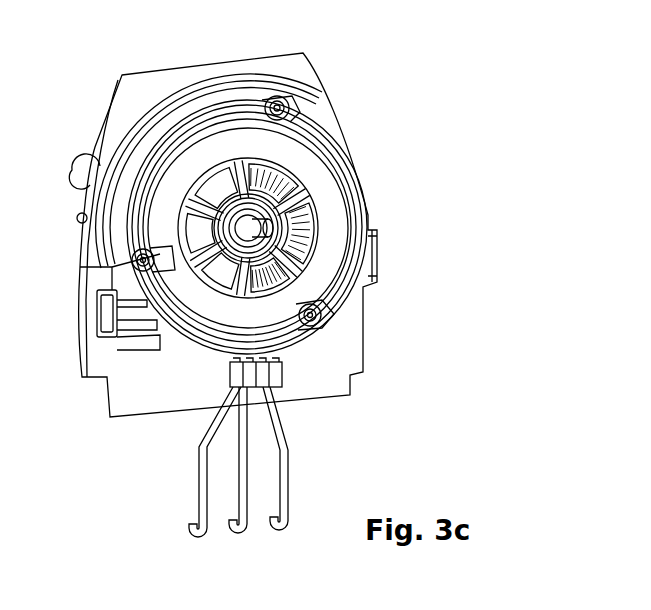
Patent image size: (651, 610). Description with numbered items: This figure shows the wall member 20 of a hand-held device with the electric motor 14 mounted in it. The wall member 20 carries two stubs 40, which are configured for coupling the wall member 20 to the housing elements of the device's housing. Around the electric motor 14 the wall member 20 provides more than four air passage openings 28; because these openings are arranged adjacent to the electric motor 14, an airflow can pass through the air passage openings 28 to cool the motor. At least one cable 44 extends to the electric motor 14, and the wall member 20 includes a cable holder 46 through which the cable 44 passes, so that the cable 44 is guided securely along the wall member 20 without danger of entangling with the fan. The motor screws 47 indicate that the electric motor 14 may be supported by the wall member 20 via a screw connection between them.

The electric motor 14 is at (308, 203).
The wall member 20 is at (295, 68).
The air passage opening 28 is at (332, 139).
The stub 40 is at (118, 328).
The cable 44 is at (201, 497).
The cable holder 46 is at (299, 387).
The motor screw 47 is at (272, 100).